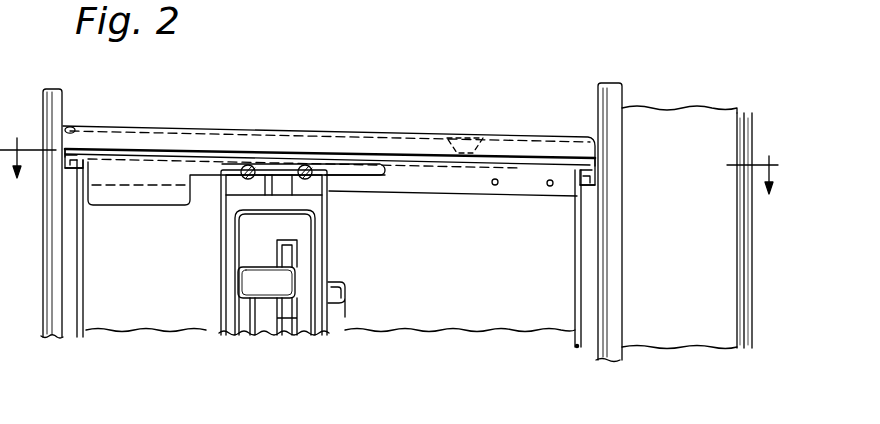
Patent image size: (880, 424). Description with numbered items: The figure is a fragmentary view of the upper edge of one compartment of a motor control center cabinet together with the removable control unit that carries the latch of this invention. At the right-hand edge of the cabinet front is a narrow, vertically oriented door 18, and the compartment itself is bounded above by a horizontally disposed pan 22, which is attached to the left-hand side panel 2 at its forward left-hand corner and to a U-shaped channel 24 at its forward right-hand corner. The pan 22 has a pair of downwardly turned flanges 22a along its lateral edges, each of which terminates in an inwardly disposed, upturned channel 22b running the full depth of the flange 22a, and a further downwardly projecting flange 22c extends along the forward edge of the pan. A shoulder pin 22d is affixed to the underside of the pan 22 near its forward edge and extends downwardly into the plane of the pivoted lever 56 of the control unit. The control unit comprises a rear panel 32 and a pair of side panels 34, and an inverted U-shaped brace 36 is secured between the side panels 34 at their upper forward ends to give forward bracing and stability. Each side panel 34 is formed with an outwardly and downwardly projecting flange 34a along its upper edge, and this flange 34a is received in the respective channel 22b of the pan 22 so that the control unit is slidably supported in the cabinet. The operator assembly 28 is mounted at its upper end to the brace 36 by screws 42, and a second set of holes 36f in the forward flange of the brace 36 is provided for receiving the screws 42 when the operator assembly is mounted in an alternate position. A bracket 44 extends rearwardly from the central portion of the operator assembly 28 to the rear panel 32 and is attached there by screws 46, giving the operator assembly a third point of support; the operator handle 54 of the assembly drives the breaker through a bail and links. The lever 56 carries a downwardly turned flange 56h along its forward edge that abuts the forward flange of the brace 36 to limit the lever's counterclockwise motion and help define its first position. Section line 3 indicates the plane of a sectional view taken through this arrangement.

The left-hand side panel 2 is at (41, 305).
The section line 3- 3 is at (389, 153).
The door 18 is at (678, 336).
The pan 22 is at (200, 126).
The flange 22a is at (63, 160).
The channel 22b is at (72, 180).
The flange 22c is at (133, 136).
The shoulder pin 22d is at (482, 136).
The U-shaped channel 24 is at (614, 356).
The operator assembly 28 is at (270, 345).
The rear panel 32 is at (455, 320).
The side panel 34 is at (82, 306).
The flange 34a is at (79, 160).
The brace 36 is at (528, 194).
The holes 36f is at (494, 186).
The screws 42 is at (250, 165).
The bracket 44 is at (342, 312).
The screws 46 is at (340, 286).
The operator handle 54 is at (247, 282).
The lever 56 is at (340, 160).
The flange 56h is at (356, 176).